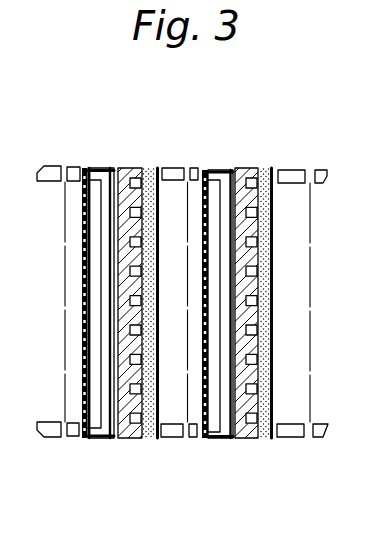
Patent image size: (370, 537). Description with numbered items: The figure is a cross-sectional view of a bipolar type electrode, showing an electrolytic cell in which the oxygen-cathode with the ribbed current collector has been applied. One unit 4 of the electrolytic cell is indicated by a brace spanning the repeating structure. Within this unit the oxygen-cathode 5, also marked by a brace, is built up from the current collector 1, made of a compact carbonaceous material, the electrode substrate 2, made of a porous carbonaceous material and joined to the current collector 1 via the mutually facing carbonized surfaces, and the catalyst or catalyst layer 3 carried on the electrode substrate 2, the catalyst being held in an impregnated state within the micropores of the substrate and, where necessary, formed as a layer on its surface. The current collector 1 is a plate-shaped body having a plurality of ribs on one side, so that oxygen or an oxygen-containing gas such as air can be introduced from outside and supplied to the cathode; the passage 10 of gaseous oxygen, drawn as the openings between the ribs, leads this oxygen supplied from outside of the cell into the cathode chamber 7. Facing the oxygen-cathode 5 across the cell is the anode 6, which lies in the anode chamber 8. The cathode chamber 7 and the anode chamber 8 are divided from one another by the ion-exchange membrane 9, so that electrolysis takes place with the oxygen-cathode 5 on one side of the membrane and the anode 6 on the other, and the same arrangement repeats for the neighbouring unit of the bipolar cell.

The current collector 1 is at (125, 358).
The electrode substrate 2 is at (151, 310).
The catalyst layer 3 is at (150, 437).
The unit of electrolytic cell 4 is at (118, 118).
The oxygen-cathode 5 is at (117, 160).
The anode 6 is at (215, 411).
The cathode chamber 7 is at (175, 203).
The anode chamber 8 is at (214, 208).
The ion-exchange membrane 9 is at (187, 414).
The passage of gaseous oxygen 10 is at (133, 331).